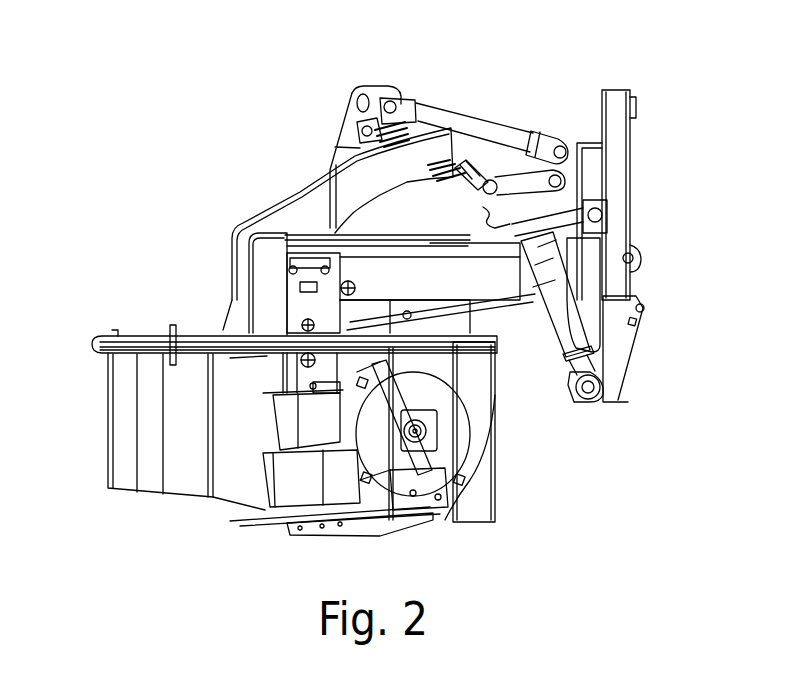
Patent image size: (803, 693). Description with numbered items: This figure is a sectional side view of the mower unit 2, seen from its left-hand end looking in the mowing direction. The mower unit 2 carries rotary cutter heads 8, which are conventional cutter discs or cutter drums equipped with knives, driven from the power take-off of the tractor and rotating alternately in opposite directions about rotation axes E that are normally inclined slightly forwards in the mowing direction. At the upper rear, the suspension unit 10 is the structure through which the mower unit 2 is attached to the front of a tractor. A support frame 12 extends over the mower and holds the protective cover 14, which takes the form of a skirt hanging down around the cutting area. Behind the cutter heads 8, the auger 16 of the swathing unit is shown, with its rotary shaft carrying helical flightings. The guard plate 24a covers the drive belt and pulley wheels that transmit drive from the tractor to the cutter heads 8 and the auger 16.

The mower unit 2 is at (148, 160).
The suspension unit 10 is at (509, 76).
The guard plate 24a is at (248, 264).
The support frame 12 is at (98, 343).
The protective cover 14 is at (108, 452).
The rotation axis E is at (307, 475).
The auger 16 is at (475, 452).
The rotary cutter head 8 is at (245, 524).